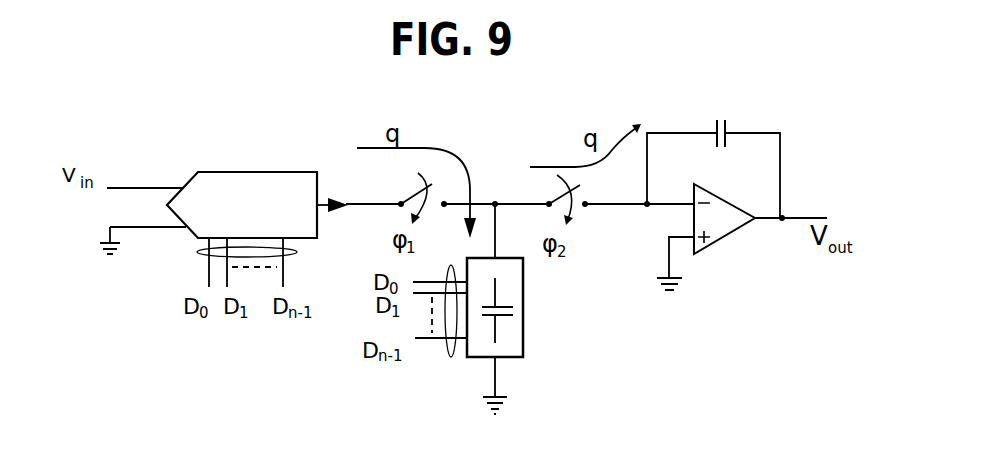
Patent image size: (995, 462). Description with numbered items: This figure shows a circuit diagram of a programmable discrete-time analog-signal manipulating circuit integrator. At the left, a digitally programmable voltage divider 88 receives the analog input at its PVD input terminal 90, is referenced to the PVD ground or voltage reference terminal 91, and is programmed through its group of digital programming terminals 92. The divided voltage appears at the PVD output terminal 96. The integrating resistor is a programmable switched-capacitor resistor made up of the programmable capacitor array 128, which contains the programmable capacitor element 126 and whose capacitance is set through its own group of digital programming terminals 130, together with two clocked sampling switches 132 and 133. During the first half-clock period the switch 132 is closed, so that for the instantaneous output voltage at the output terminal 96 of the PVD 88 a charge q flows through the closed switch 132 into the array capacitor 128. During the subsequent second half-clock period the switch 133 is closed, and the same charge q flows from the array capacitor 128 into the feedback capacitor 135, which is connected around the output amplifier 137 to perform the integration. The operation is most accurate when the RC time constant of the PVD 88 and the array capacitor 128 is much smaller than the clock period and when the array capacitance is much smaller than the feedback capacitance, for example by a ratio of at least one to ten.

The digitally programmable voltage divider 88 is at (260, 172).
The PVD input terminal 90 is at (150, 188).
The PVD ground terminal 91 is at (152, 228).
The PVD group of digital programming terminals 92 is at (297, 252).
The PVD output terminal 96 is at (353, 203).
The clocked sampling switch 132 is at (422, 184).
The clocked sampling switch 133 is at (558, 192).
The programmable capacitor 126 is at (510, 311).
The programmable capacitor array 128 is at (529, 310).
The group of digital programming terminals 130 is at (451, 357).
The feedback capacitor 135 is at (716, 150).
The operational amplifier 137 is at (725, 238).